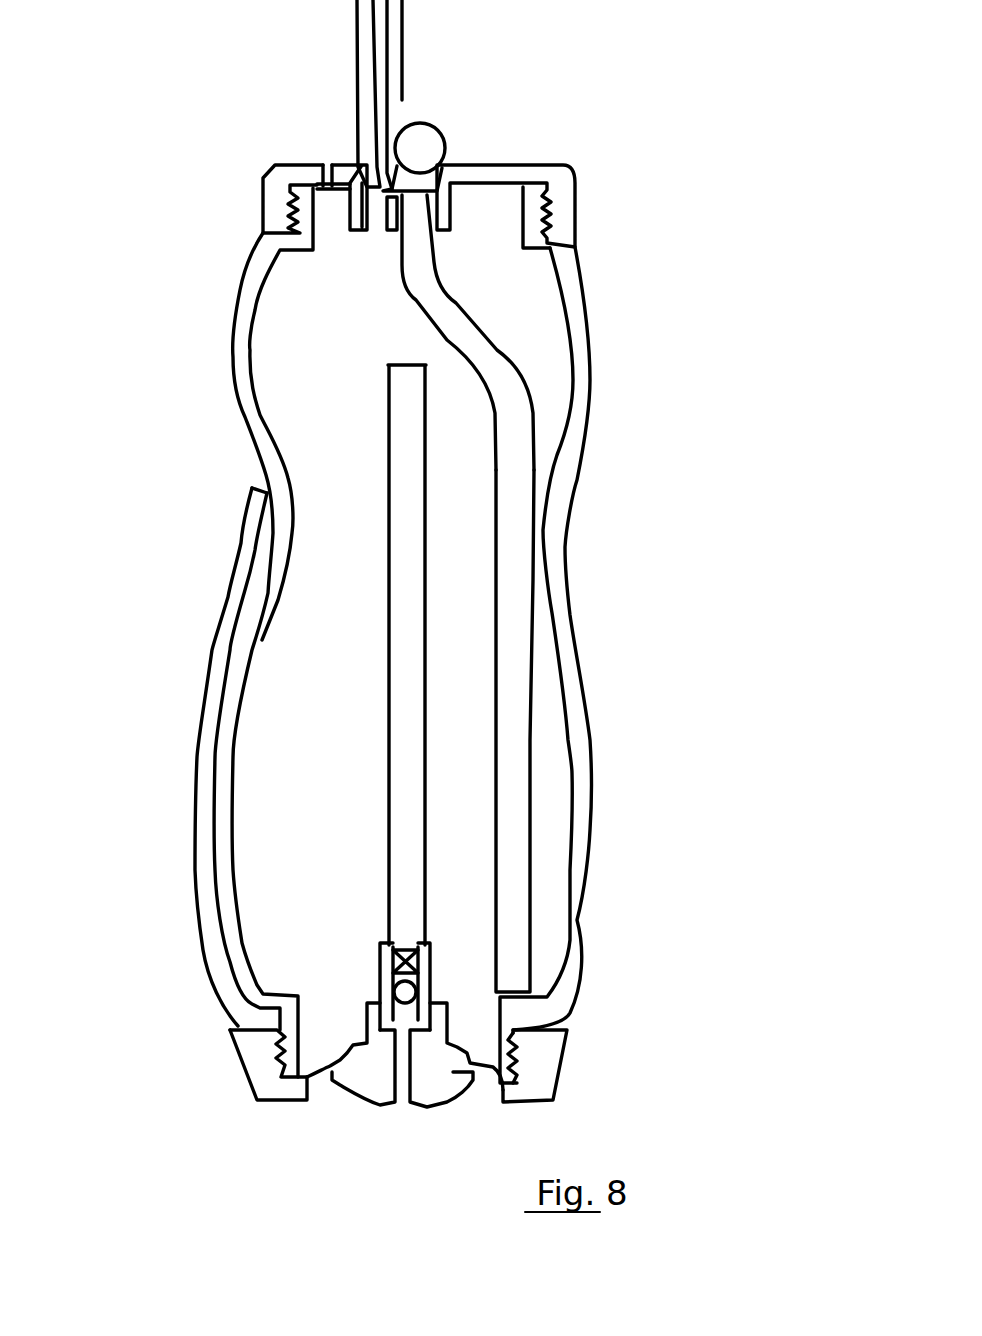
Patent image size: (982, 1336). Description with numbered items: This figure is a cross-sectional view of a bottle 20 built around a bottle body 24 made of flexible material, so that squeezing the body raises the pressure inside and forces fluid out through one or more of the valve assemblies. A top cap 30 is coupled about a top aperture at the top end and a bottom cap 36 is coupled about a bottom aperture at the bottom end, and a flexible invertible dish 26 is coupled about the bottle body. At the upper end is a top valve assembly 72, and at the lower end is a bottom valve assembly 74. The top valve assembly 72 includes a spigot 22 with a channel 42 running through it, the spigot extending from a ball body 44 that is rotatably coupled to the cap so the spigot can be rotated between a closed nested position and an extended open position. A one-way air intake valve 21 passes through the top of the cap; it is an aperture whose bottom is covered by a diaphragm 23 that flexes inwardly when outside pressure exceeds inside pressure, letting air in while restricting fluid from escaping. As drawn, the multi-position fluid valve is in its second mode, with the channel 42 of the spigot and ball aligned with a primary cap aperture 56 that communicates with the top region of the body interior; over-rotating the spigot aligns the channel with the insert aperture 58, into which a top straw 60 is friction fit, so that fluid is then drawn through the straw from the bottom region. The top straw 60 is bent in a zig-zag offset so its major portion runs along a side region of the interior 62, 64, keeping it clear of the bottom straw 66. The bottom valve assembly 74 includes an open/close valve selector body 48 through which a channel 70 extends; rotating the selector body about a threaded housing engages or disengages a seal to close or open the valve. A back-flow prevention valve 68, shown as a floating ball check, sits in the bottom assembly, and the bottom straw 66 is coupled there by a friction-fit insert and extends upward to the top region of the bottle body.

The bottle 20 is at (752, 136).
The one-way air intake valve 21 is at (327, 155).
The spigot 22 is at (343, 80).
The diaphragm 23 is at (335, 200).
The bottle body 24 is at (237, 382).
The flexible invertible dish 26 is at (212, 660).
The top cap 30 is at (577, 200).
The bottom cap 36 is at (550, 1077).
The channel 42 is at (362, 38).
The ball body 44 is at (423, 137).
The open/close valve selector body 48 is at (345, 1105).
The primary cap aperture 56 is at (370, 258).
The insert aperture 58 is at (468, 237).
The top straw 60 is at (518, 710).
The interior space 62 is at (520, 312).
The chamber 64 is at (350, 616).
The bottom straw 66 is at (400, 712).
The back-flow prevention valve 68 is at (352, 947).
The channel 70 is at (405, 1128).
The top valve assembly 72 is at (484, 142).
The bottom valve assembly 74 is at (341, 979).